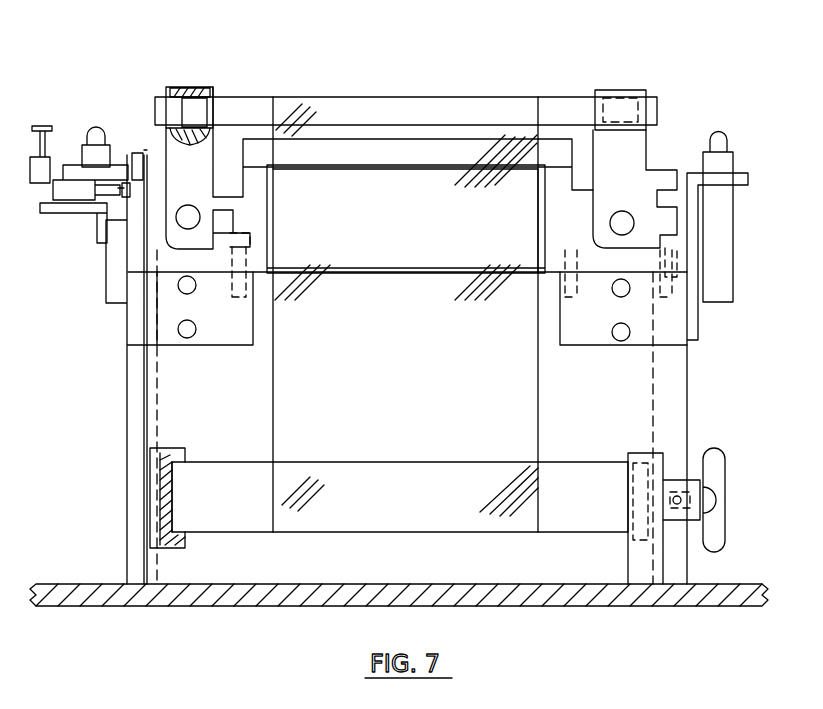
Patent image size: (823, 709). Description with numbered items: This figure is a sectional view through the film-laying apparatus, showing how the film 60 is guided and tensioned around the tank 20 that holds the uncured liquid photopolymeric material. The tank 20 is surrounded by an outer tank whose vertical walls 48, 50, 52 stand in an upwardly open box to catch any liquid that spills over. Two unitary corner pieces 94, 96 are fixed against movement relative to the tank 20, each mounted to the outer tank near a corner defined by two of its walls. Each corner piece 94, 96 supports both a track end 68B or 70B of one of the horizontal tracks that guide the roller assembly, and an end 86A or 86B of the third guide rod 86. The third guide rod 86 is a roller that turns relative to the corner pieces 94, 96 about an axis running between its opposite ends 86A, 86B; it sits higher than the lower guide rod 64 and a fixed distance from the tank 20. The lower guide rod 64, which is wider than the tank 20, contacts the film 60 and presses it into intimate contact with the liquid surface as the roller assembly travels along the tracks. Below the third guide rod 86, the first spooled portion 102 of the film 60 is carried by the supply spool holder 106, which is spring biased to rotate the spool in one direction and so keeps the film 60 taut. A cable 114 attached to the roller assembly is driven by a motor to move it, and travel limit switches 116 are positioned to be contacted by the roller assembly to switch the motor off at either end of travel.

The tank 20 is at (262, 213).
The vertical wall of outer tank 48 is at (628, 379).
The vertical wall of outer tank 50 is at (126, 406).
The vertical wall of outer tank 52 is at (688, 418).
The sheet of film 60 is at (470, 100).
The lower guide rod 64 is at (542, 160).
The end of first track 68B is at (192, 222).
The end of second track 70B is at (618, 223).
The third guide rod 86 is at (400, 100).
The end of third guide rod 86A is at (233, 107).
The end of third guide rod 86B is at (583, 107).
The corner piece 94 is at (186, 153).
The corner piece 96 is at (636, 152).
The first spooled portion of the film 102 is at (232, 468).
The supply spool holder 106 is at (660, 538).
The cable 114 is at (142, 444).
The travel limit switches 116 is at (76, 192).